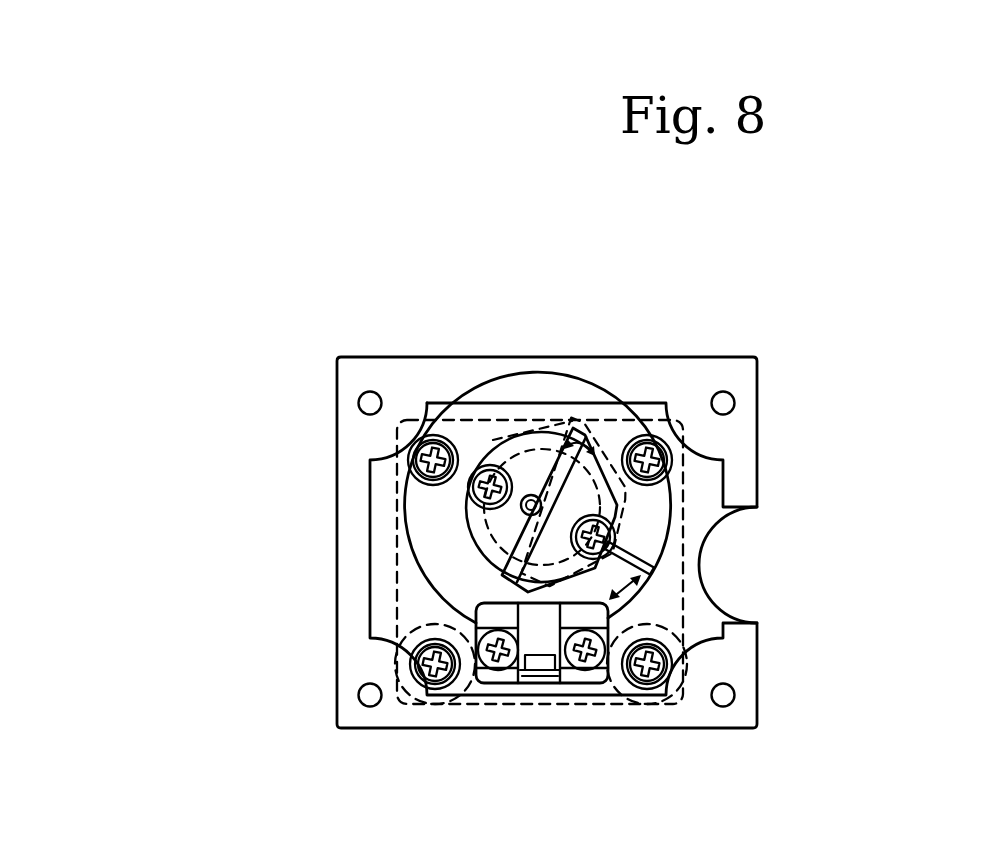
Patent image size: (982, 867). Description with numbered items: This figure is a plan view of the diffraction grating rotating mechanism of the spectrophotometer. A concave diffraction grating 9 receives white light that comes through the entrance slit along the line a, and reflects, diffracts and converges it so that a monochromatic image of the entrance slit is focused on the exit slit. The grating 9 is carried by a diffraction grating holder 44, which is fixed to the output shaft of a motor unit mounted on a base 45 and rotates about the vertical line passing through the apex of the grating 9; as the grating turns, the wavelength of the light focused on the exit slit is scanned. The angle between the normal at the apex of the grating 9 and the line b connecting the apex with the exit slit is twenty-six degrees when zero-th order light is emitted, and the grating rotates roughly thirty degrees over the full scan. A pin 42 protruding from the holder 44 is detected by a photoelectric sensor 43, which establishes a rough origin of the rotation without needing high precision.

The concave diffraction grating 9 is at (583, 432).
The pin 42 is at (645, 552).
The photoelectric sensor 43 is at (560, 683).
The diffraction grating holder 44 is at (622, 502).
The base 45 is at (334, 402).
The line a is at (537, 490).
The line b is at (535, 515).